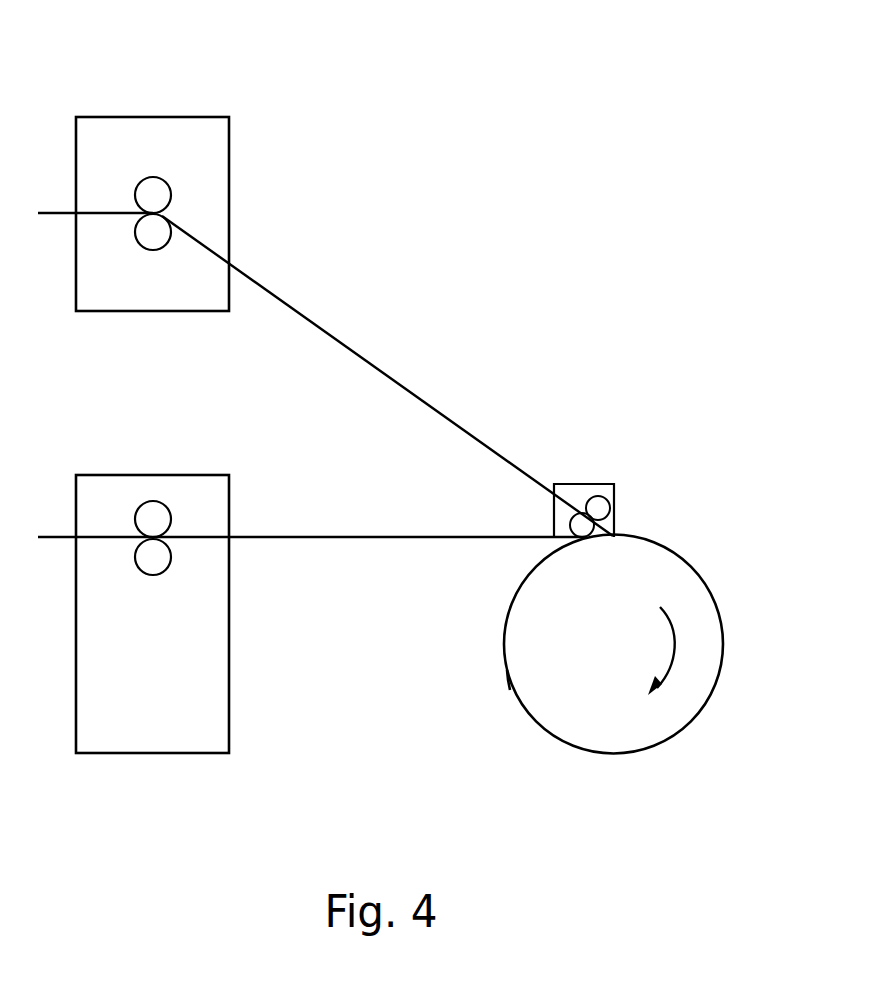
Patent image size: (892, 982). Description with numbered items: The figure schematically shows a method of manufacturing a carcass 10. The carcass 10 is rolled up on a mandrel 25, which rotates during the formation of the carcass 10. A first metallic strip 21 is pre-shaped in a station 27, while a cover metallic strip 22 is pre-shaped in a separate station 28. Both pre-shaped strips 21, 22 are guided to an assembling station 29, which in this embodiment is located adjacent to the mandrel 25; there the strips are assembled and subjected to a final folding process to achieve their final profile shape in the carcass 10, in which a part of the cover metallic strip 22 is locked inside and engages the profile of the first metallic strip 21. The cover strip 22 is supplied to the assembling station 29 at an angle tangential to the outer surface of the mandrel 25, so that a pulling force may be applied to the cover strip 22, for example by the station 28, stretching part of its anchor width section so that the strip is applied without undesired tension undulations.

The carcass 10 is at (718, 683).
The first metallic strip 21 is at (342, 338).
The cover metallic strip 22 is at (347, 540).
The mandrel 25 is at (530, 683).
The station 27 is at (160, 113).
The station 28 is at (155, 755).
The assembling station 29 is at (585, 483).